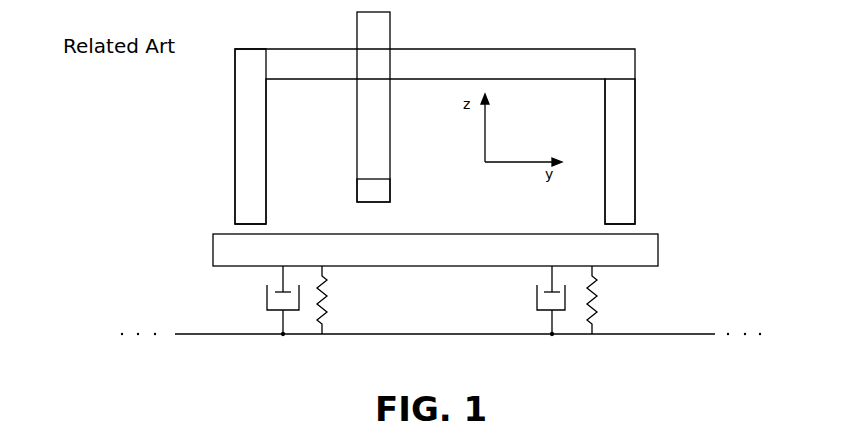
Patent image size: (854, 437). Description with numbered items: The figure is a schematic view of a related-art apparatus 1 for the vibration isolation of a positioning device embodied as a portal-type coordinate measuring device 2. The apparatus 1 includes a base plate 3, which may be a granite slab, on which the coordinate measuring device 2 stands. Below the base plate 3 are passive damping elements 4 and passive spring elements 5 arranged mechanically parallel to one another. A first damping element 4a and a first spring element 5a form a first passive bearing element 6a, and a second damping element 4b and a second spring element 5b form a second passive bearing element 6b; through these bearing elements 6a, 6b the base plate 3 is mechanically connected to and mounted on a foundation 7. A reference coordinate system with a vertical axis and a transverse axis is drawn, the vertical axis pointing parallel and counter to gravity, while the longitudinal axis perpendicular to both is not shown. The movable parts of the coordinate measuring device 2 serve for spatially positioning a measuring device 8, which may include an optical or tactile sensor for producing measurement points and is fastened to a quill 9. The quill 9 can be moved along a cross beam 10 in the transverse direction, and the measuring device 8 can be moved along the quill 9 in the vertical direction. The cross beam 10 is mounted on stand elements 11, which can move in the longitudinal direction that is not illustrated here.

The apparatus 1 is at (138, 280).
The coordinate measuring device 2 is at (622, 137).
The base plate 3 is at (645, 247).
The passive damping elements 4 is at (375, 300).
The first damping element 4a is at (265, 305).
The second damping element 4b is at (535, 305).
The passive spring elements 5 is at (499, 300).
The first spring element 5a is at (327, 300).
The second spring element 5b is at (597, 300).
The first passive bearing element 6a is at (281, 342).
The second passive bearing element 6b is at (572, 338).
The foundation 7 is at (680, 333).
The measuring device 8 is at (381, 190).
The quill 9 is at (378, 113).
The cross beam 10 is at (446, 118).
The stand elements 11 is at (248, 128).